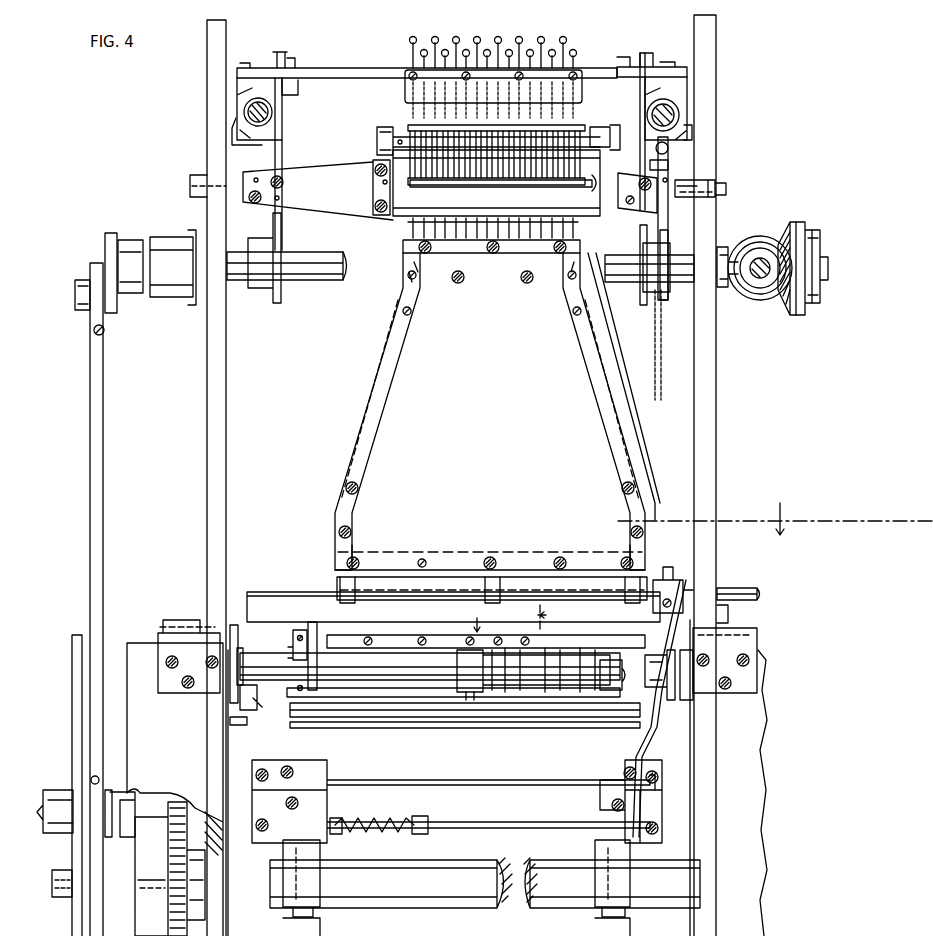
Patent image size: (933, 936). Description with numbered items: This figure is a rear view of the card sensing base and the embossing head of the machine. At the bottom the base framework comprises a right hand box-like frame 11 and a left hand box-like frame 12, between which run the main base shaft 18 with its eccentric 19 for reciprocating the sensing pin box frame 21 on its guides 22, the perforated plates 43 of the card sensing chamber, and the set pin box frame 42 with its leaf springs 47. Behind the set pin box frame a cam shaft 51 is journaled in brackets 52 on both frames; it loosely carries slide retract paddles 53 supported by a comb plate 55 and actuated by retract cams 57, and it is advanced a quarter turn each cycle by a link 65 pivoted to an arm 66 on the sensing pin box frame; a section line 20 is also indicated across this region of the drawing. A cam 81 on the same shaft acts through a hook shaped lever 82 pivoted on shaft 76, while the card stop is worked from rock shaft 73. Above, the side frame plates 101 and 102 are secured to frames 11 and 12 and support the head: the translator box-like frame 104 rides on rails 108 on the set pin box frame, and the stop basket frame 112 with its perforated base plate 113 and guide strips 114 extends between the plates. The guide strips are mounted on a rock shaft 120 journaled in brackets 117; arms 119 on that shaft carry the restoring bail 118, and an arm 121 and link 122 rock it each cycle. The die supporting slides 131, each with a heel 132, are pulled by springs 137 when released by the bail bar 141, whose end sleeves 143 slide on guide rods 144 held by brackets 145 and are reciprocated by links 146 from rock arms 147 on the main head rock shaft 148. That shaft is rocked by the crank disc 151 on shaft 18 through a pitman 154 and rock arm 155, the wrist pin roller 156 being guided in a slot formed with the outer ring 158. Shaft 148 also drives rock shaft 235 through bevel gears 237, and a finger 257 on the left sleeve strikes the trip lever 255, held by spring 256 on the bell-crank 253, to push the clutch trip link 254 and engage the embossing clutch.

The right hand box-like frame 11 is at (202, 745).
The left hand box-like frame 12 is at (722, 786).
The main base shaft 18 is at (500, 875).
The eccentric 19 is at (697, 559).
The section line 20 is at (542, 678).
The sensing pin box frame 21 is at (405, 748).
The guides 22 is at (310, 910).
The set pin box frame 42 is at (318, 685).
The perforated plates 43 is at (286, 722).
The leaf springs 47 is at (456, 927).
The cam shaft 51 is at (258, 668).
The brackets 52 is at (165, 668).
The slide retract paddles 53 is at (470, 700).
The comb plate 55 is at (603, 690).
The retract cams 57 is at (475, 660).
The link 65 is at (636, 736).
The arm 66 is at (632, 812).
The rock shaft 73 is at (322, 650).
The shaft 76 is at (734, 590).
The cam 81 is at (672, 680).
The hook shaped lever 82 is at (690, 556).
The side frame plate 101 is at (208, 433).
The side frame plate 102 is at (706, 414).
The box-like frame 104 is at (488, 453).
The rails 108 is at (297, 592).
The supporting frame 112 is at (347, 193).
The perforated base plate 113 is at (566, 232).
The guide strips 114 is at (410, 128).
The brackets 117 is at (373, 190).
The restoring bail 118 is at (476, 187).
The arms 119 is at (590, 195).
The rock shaft 120 is at (377, 139).
The arm 121 is at (614, 135).
The link 122 is at (650, 440).
The die supporting slides 131 is at (550, 85).
The heel 132 is at (562, 120).
The springs 137 is at (412, 44).
The bail bar 141 is at (357, 72).
The sleeves 143 is at (296, 98).
The guide rods 144 is at (268, 112).
The brackets 145 is at (234, 142).
The links 146 is at (288, 54).
The rock arms 147 is at (284, 165).
The rock shaft 148 is at (315, 282).
The crank disc 151 is at (120, 793).
The pitman 154 is at (104, 520).
The rock arm 155 is at (108, 302).
The roller 156 is at (72, 793).
The outer ring 158 is at (77, 635).
The rock shaft 235 is at (762, 279).
The bevel gears 237 is at (788, 312).
The bell-crank 253 is at (655, 205).
The clutch trip link 254 is at (660, 345).
The trip lever 255 is at (670, 162).
The spring 256 is at (672, 172).
The finger 257 is at (668, 152).